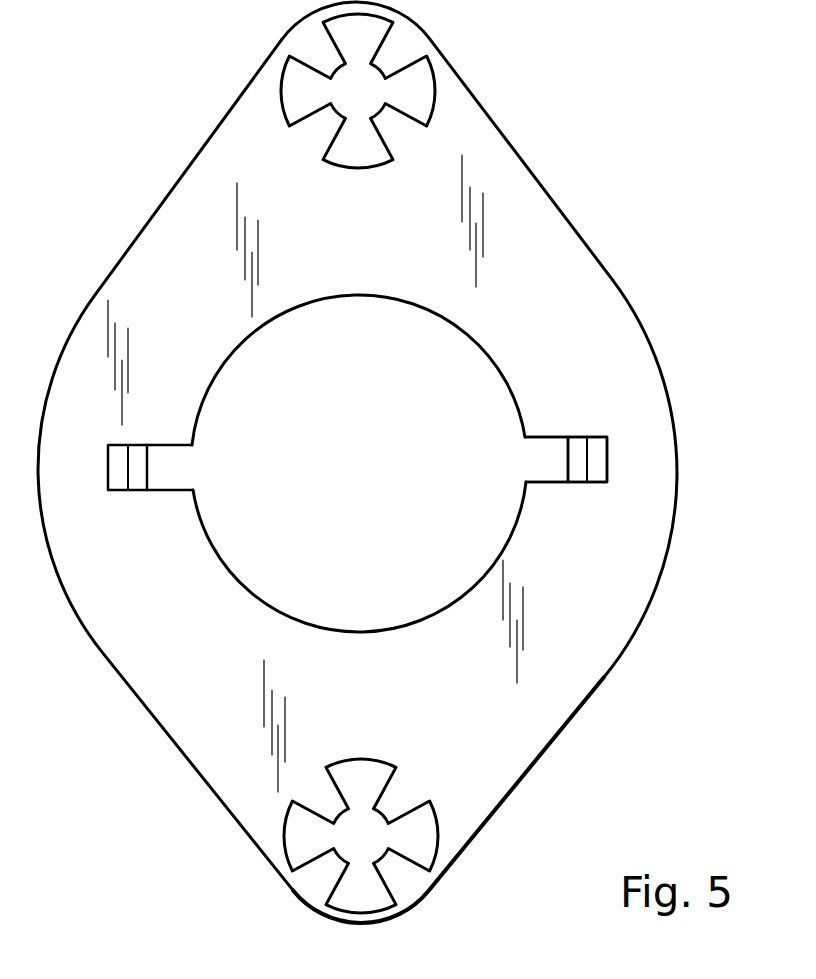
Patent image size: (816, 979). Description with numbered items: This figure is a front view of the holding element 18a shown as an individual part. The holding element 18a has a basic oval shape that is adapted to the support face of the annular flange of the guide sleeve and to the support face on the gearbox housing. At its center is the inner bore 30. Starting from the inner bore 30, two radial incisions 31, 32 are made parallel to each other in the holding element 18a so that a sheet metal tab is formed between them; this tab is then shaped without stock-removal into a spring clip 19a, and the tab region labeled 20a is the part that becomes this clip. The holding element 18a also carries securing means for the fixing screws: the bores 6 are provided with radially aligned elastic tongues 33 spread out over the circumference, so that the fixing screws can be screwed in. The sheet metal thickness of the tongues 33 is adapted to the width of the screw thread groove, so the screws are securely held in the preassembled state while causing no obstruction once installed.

The bore 6 is at (363, 842).
The holding element 18a is at (580, 268).
The spring clip 19a is at (596, 491).
The tab 20a is at (575, 455).
The inner bore 30 is at (222, 566).
The radial incision 31 is at (548, 437).
The radial incision 32 is at (547, 483).
The elastic tongue 33 is at (393, 127).